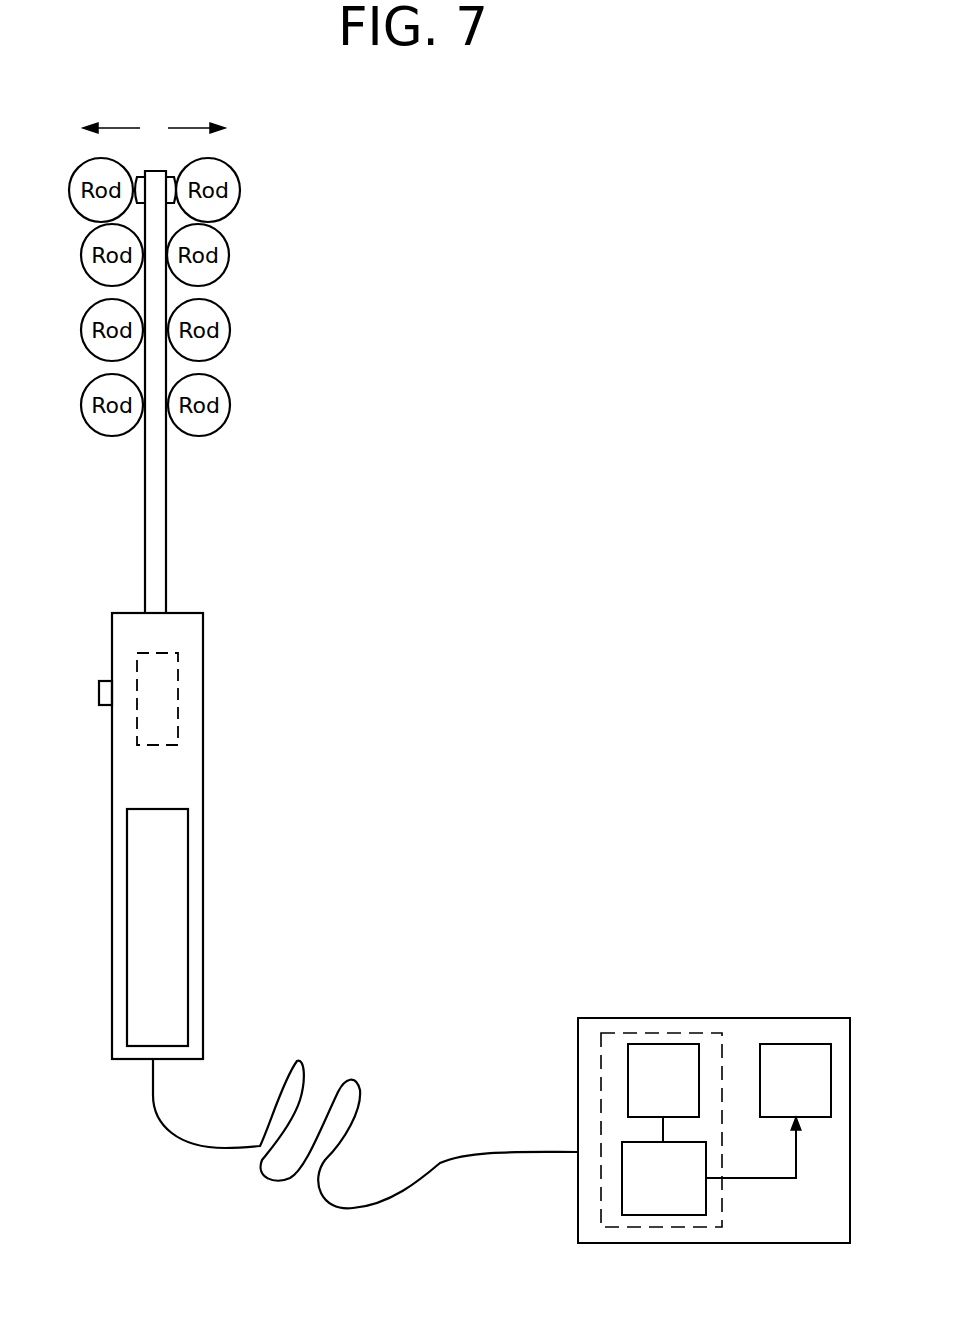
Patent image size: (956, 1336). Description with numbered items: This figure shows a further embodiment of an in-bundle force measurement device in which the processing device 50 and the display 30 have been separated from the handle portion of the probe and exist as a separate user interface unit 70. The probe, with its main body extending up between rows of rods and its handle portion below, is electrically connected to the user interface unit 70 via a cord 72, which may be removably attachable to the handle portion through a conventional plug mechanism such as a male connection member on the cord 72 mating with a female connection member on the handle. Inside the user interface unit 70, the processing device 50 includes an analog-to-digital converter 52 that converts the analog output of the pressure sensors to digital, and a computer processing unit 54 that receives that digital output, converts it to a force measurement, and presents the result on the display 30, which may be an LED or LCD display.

The display 30 is at (768, 1111).
The processing device 50 is at (722, 1198).
The analog-to-digital (A/D) converter 52 is at (640, 1044).
The computer processing unit (CPU) 54 is at (622, 1195).
The user interface unit 70 is at (700, 1018).
The cord 72 is at (348, 1088).